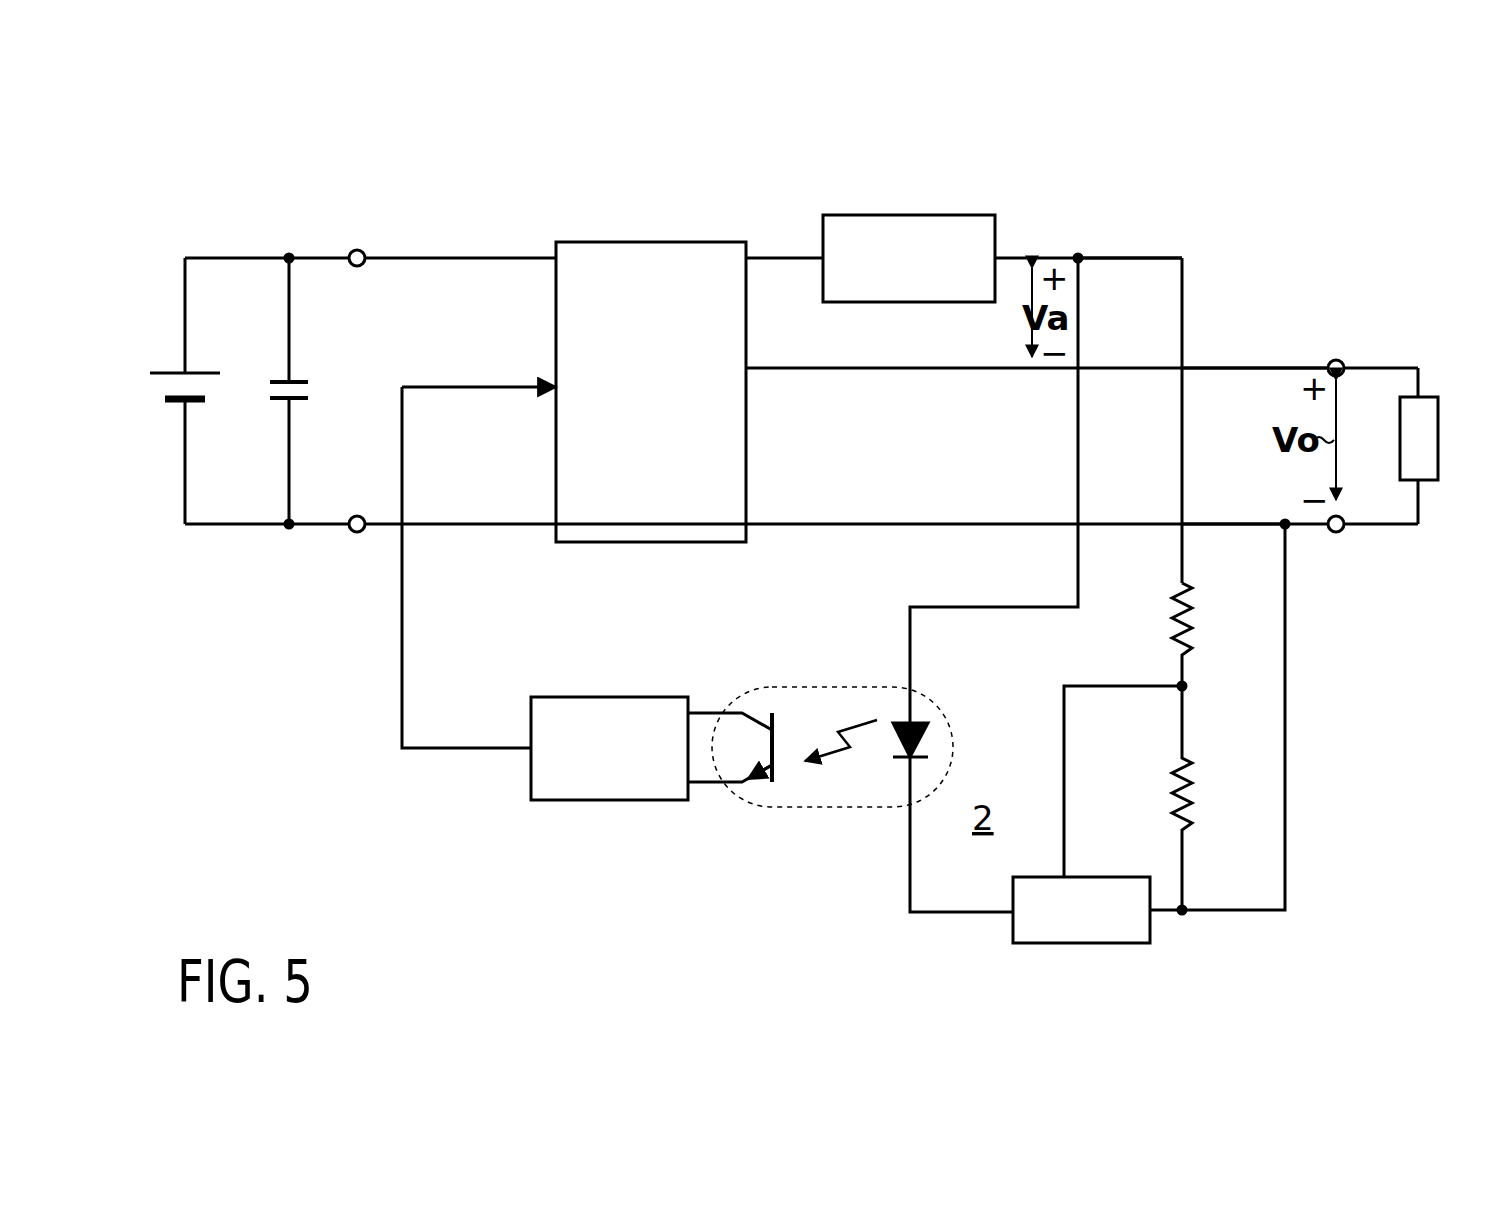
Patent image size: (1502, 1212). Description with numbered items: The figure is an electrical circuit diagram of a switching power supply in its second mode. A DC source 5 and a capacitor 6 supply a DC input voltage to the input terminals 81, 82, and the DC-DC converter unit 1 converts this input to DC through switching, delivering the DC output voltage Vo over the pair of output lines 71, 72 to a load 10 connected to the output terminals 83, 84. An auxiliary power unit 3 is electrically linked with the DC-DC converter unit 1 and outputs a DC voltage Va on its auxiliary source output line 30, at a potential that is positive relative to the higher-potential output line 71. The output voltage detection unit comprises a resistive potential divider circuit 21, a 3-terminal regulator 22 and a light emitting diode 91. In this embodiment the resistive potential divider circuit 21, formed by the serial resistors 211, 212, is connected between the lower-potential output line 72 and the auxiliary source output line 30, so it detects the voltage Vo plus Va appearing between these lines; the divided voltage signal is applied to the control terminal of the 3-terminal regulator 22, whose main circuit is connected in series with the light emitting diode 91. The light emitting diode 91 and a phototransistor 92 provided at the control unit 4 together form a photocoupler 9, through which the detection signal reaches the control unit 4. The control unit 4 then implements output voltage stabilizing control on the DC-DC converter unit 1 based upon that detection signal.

The DC-DC converter unit 1 is at (647, 239).
The auxiliary power unit 3 is at (905, 216).
The control unit 4 is at (604, 697).
The DC source 5 is at (200, 383).
The capacitor 6 is at (310, 390).
The photocoupler 9 is at (810, 809).
The load 10 is at (1432, 442).
The resistive potential divider circuit 21 is at (1240, 718).
The 3-terminal regulator 22 is at (1093, 945).
The auxiliary source output line 30 is at (1129, 254).
The higher-potential output line 71 is at (1230, 364).
The lower-potential output line 72 is at (1238, 530).
The input terminal 81 is at (355, 250).
The input terminal 82 is at (357, 534).
The output terminal 83 is at (1334, 359).
The output terminal 84 is at (1336, 534).
The light emitting diode 91 is at (930, 727).
The phototransistor 92 is at (750, 710).
The resistor 211 is at (1174, 635).
The resistor 212 is at (1176, 780).